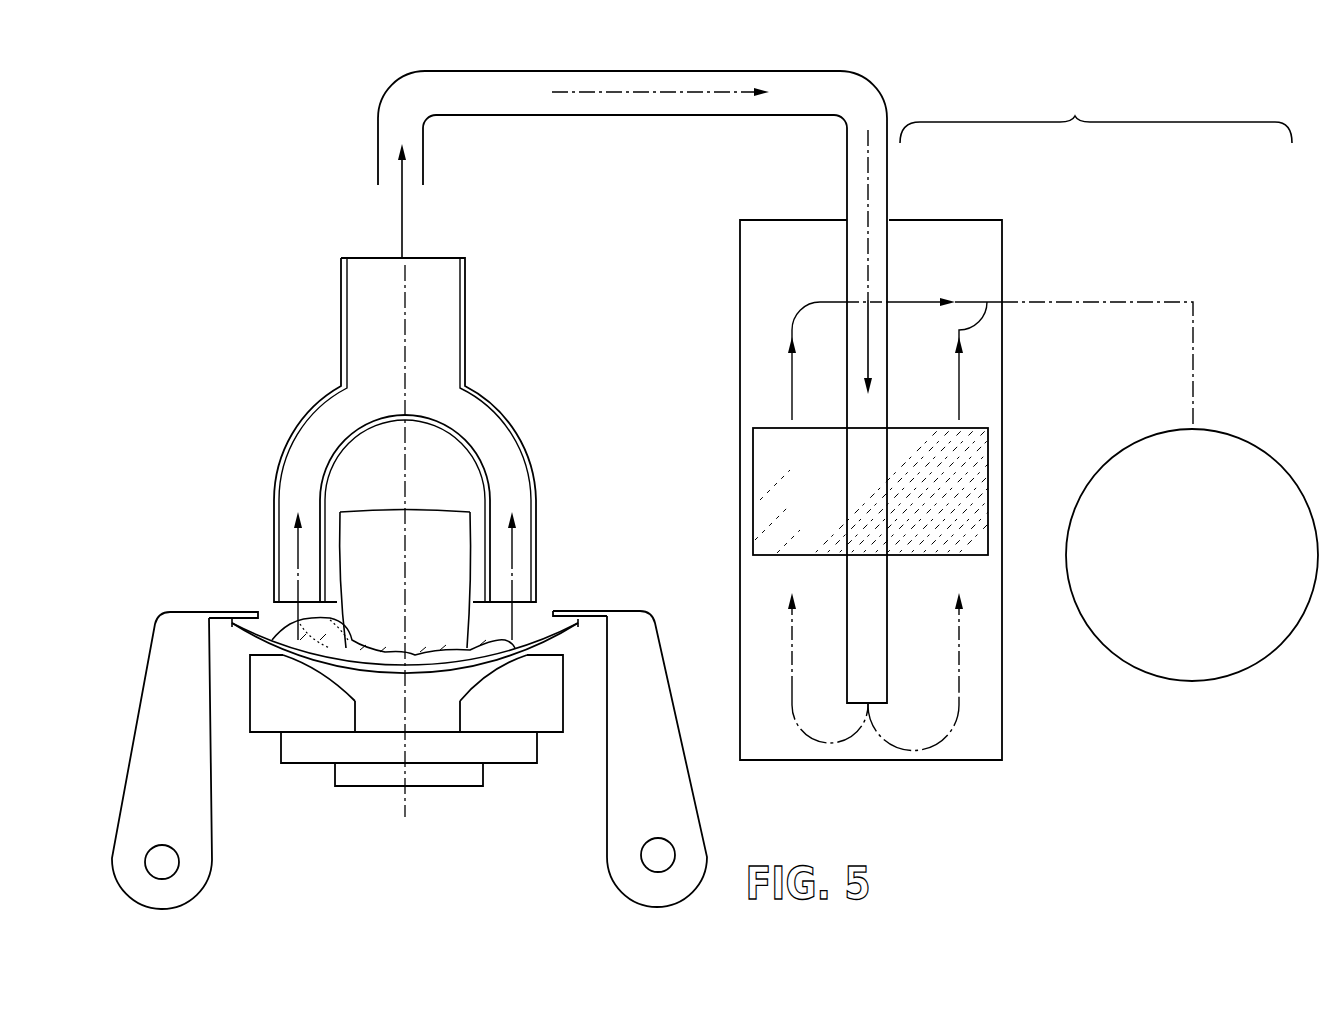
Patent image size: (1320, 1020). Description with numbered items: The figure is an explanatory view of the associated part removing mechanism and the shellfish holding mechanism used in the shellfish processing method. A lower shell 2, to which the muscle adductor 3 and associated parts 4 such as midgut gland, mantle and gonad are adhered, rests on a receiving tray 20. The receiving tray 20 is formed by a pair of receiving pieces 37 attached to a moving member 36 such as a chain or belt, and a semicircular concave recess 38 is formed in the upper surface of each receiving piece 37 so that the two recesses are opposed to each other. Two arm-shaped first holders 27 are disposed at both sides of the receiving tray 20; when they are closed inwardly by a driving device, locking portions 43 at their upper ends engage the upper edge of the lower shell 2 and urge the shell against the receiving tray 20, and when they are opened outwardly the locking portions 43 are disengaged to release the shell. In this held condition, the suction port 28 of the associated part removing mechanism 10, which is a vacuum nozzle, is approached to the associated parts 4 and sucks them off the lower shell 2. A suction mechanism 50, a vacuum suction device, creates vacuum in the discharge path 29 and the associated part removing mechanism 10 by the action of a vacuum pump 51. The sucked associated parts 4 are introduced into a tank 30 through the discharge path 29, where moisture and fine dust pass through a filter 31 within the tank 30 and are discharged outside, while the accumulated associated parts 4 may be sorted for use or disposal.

The lower shell 2 is at (238, 628).
The muscle adductor 3 is at (432, 511).
The associated parts 4 is at (312, 637).
The associated part removing mechanism 10 is at (530, 445).
The receiving tray 20 is at (406, 734).
The first holders 27 is at (140, 693).
The suction port 28 is at (282, 606).
The discharge path 29 is at (552, 116).
The tank 30 is at (739, 370).
The filter 31 is at (753, 484).
The moving member 36 is at (457, 775).
The receiving pieces 37 is at (408, 722).
The concave recess 38 is at (348, 697).
The locking portions 43 is at (215, 612).
The suction mechanism 50 is at (989, 420).
The vacuum pump 51 is at (1203, 683).